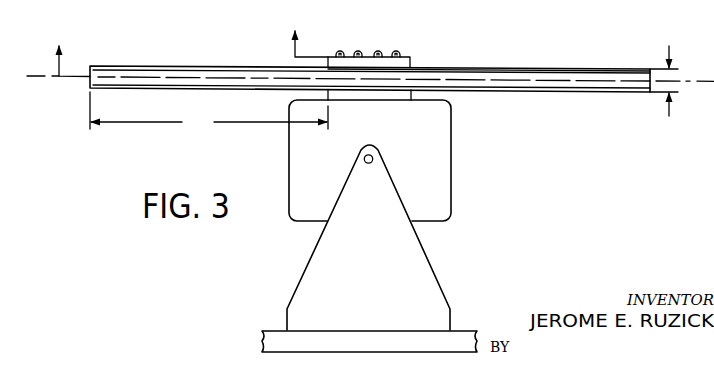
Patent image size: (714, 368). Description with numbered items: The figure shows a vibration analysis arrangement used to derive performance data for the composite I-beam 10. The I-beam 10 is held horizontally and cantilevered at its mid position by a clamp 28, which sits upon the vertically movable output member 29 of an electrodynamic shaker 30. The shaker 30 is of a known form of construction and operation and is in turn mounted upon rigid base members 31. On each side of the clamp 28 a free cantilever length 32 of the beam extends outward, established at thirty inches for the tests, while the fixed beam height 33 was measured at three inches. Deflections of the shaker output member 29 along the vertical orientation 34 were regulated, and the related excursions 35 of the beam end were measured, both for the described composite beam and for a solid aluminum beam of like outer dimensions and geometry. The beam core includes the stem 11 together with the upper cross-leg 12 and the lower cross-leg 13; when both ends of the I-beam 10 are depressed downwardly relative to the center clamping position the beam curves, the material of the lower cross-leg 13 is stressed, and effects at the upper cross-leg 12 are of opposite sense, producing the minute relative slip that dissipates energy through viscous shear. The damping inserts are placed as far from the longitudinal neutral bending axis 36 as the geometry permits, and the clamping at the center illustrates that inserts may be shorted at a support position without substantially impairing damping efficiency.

The I-beam 10 is at (172, 64).
The stem 11 is at (242, 75).
The cross-leg 12 is at (500, 72).
The lower cross-leg 13 is at (575, 90).
The clamp 28 is at (383, 63).
The vertically movable output member 29 is at (397, 96).
The electrodynamic shaker 30 is at (432, 174).
The rigid base members 31 is at (430, 298).
The free cantilever length 32 is at (209, 112).
The fixed beam height 33 is at (672, 56).
The vertical orientation 34 is at (296, 46).
The excursions of the beam end 35 is at (60, 58).
The longitudinal neutral bending axis 36 is at (359, 75).